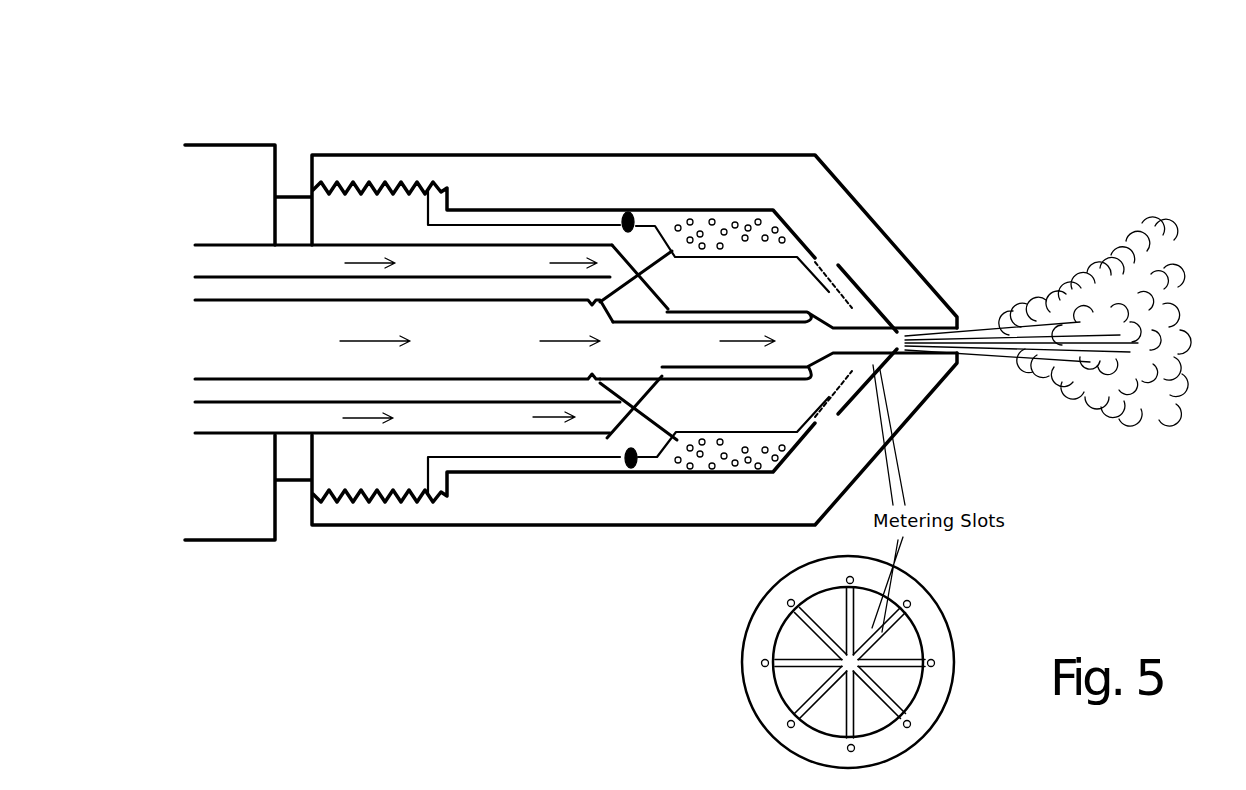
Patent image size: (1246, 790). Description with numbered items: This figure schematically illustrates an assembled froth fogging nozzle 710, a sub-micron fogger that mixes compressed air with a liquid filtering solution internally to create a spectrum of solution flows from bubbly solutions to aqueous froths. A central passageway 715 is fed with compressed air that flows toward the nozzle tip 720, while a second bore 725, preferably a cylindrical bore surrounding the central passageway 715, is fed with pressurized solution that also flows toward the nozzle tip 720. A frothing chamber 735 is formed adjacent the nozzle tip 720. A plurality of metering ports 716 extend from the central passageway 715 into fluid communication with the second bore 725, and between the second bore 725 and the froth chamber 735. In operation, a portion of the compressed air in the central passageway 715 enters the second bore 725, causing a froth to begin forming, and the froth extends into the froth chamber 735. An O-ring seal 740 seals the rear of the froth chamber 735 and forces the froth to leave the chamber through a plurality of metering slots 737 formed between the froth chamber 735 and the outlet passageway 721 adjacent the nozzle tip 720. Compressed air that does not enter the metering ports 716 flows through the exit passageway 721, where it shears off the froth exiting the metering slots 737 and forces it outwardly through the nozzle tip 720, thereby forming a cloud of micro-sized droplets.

The froth fogging nozzle 710 is at (869, 118).
The central passageway 715 is at (507, 355).
The metering ports 716 is at (612, 272).
The nozzle tip 720 is at (985, 316).
The outlet passageway 721 is at (885, 333).
The second bore 725 is at (512, 274).
The frothing chamber 735 is at (714, 228).
The metering slots 737 is at (823, 273).
The O-ring seal 740 is at (628, 212).